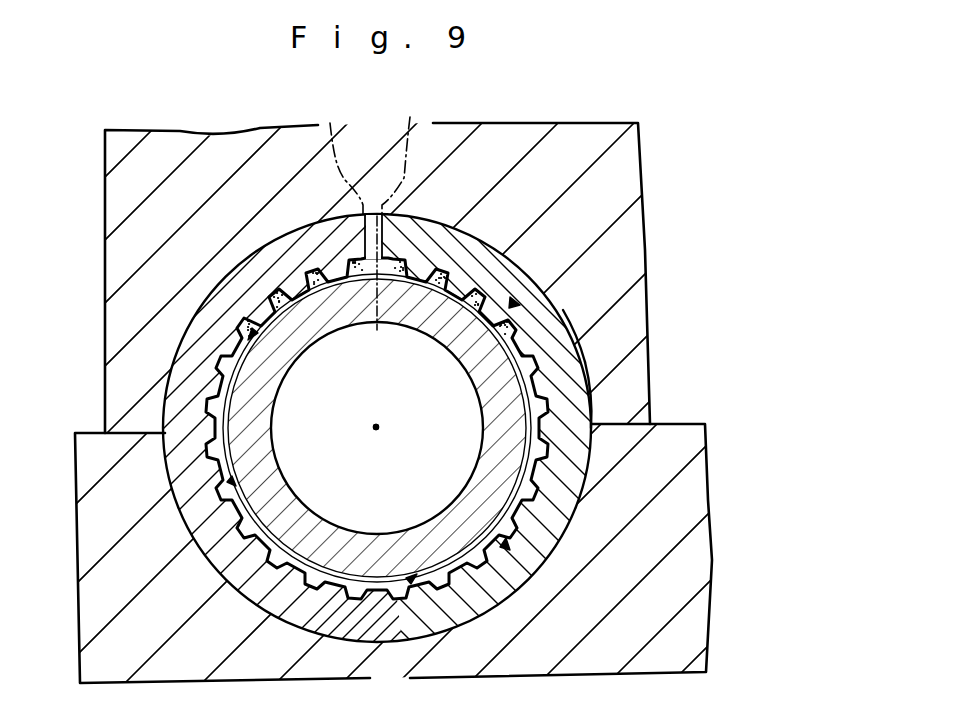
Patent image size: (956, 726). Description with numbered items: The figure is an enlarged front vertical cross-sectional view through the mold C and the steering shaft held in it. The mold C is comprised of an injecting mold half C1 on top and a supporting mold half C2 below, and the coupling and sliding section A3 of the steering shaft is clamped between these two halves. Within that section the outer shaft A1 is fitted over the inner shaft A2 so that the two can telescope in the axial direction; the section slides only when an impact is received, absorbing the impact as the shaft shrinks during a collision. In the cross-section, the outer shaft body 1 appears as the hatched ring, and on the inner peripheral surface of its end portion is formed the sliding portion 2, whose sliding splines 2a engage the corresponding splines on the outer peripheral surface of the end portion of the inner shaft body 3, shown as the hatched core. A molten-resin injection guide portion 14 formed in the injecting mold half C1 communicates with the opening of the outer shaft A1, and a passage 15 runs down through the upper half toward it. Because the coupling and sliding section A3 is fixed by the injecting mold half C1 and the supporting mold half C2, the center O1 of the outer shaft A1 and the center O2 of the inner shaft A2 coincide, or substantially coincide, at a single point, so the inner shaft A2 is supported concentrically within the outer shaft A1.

The outer shaft body 1 is at (172, 372).
The sliding portion 2 is at (257, 327).
The sliding splines 2a is at (250, 515).
The inner shaft body 3 is at (453, 507).
The molten-resin injection guide portion 14 is at (377, 330).
The supply passage 15 is at (350, 147).
The mold C is at (646, 140).
The injecting mold half C1 is at (650, 217).
The supporting mold half C2 is at (710, 544).
The outer shaft A1 is at (589, 353).
The inner shaft A2 is at (297, 503).
The coupling and sliding section A3 is at (567, 301).
The center of the outer shaft O1 is at (379, 427).
The center of the inner shaft O2 is at (376, 427).